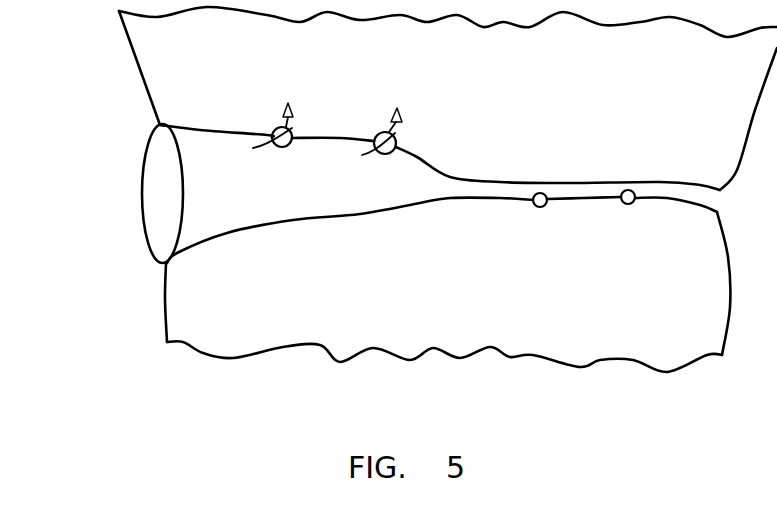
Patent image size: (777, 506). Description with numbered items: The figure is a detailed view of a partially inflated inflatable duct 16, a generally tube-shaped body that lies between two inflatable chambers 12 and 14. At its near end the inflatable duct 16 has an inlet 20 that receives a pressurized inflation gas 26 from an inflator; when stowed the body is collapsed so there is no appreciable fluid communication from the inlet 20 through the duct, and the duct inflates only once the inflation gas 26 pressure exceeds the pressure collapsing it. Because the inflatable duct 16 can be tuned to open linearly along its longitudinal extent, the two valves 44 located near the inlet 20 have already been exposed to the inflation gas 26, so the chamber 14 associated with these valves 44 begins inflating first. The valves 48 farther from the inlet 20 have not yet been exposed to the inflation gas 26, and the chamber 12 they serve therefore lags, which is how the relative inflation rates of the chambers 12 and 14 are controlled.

The inflatable chamber 12 is at (481, 301).
The inflatable chamber 14 is at (471, 79).
The inflatable duct 16 is at (396, 192).
The inlet 20 is at (200, 130).
The inflation gas 26 is at (157, 160).
The valves 44 is at (373, 128).
The valves 48 is at (622, 209).